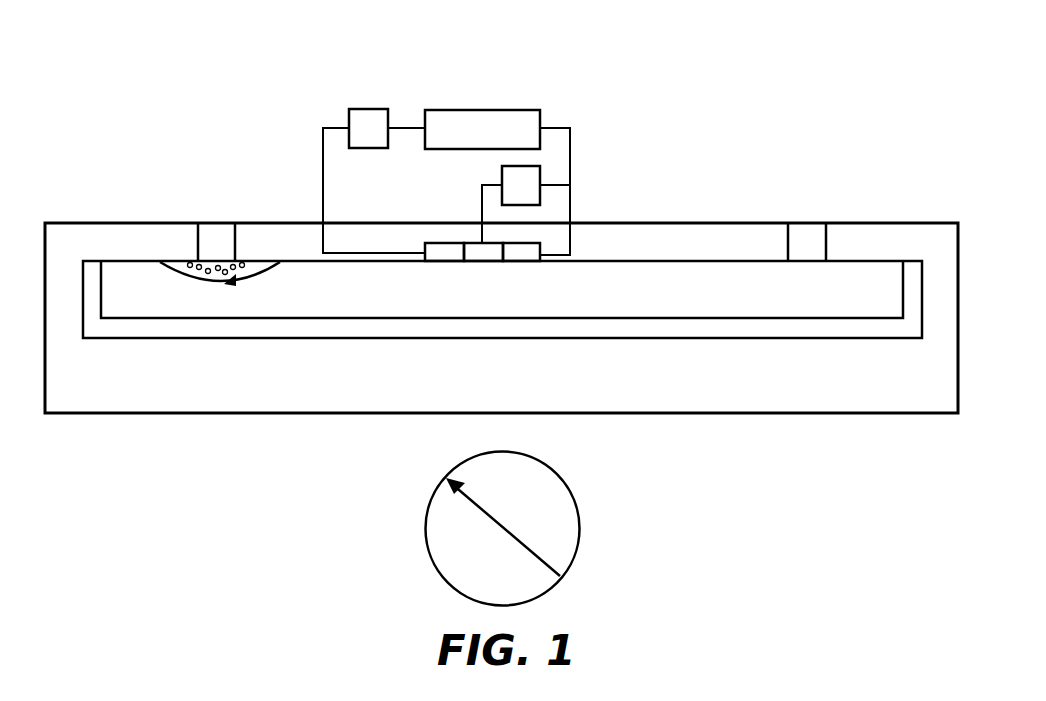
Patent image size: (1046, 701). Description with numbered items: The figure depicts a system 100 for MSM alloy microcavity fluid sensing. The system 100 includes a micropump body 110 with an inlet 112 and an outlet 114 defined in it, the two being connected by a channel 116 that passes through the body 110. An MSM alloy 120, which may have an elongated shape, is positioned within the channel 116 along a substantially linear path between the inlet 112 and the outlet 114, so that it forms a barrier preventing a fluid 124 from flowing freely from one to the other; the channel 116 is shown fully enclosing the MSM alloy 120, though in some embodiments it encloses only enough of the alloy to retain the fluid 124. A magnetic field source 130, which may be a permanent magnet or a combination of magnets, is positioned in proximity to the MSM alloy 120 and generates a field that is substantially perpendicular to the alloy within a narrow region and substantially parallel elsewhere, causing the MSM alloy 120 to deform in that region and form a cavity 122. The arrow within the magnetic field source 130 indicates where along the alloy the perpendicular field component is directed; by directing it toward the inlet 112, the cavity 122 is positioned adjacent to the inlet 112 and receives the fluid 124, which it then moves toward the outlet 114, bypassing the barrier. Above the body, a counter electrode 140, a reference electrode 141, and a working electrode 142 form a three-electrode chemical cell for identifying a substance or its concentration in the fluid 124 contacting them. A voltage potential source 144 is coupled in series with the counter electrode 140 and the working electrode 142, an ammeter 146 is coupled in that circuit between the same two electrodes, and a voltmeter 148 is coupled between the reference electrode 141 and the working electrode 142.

The system 100 is at (136, 88).
The micropump body 110 is at (135, 223).
The inlet 112 is at (216, 223).
The outlet 114 is at (805, 223).
The channel 116 is at (155, 338).
The MSM alloy 120 is at (290, 318).
The cavity 122 is at (197, 276).
The fluid 124 is at (232, 281).
The magnetic field source 130 is at (458, 462).
The counter electrode 140 is at (432, 243).
The reference electrode 141 is at (474, 243).
The working electrode 142 is at (528, 243).
The voltage potential source 144 is at (503, 110).
The ammeter 146 is at (349, 135).
The voltmeter 148 is at (540, 177).